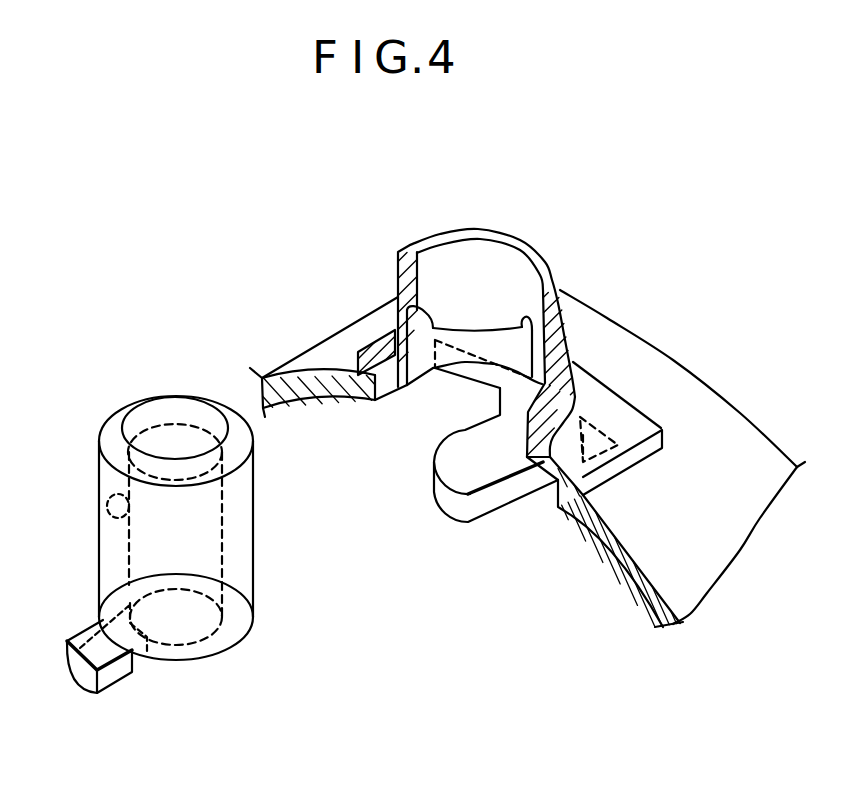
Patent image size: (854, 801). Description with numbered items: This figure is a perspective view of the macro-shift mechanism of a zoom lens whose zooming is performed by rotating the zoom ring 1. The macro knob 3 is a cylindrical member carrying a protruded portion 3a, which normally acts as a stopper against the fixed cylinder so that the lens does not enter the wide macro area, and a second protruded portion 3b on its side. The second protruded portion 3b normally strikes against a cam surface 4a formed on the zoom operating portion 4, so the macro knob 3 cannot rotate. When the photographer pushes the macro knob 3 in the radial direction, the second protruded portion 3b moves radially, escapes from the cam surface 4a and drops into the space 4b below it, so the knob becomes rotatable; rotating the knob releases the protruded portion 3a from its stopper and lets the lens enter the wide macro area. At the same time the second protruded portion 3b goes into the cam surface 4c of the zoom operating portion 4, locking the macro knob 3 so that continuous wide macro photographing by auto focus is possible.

The zoom ring 1 is at (727, 425).
The macro knob 3 is at (158, 400).
The protruded portion 3a is at (83, 678).
The second protruded portion 3b is at (107, 500).
The zoom operating portion 4 is at (608, 397).
The cam surface 4a is at (428, 308).
The space 4b is at (483, 350).
The cam surface 4c is at (553, 286).